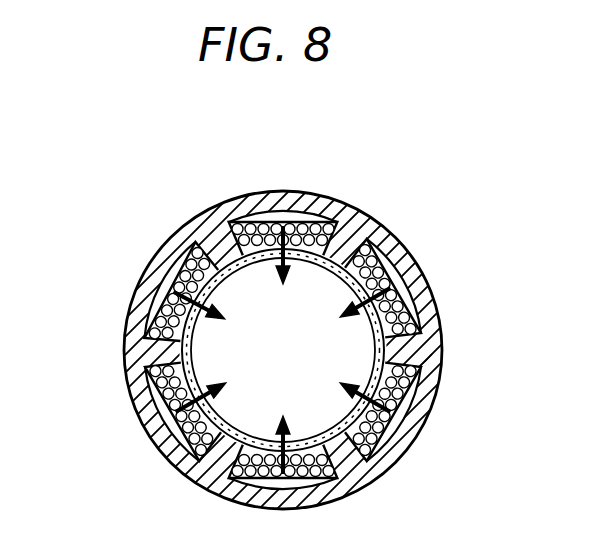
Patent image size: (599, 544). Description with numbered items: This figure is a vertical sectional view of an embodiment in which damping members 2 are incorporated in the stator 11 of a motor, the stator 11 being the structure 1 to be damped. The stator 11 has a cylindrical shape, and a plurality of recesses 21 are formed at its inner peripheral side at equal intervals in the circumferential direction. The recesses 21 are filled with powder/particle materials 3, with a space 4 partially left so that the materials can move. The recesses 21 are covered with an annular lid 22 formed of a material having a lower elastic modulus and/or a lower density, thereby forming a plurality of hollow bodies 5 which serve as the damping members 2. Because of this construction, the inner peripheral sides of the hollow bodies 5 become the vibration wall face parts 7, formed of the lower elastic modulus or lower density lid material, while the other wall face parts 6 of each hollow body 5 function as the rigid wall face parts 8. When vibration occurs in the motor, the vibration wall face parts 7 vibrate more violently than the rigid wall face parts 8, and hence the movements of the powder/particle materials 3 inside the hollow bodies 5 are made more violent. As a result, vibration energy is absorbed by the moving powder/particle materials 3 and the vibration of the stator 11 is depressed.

The structure to be damped 1 is at (178, 240).
The damping member 2 is at (157, 433).
The powder/particle materials 3 is at (423, 384).
The space 4 is at (125, 386).
The hollow body 5 is at (322, 206).
The wall face parts 6 is at (413, 437).
The vibration wall face part 7 is at (190, 340).
The rigid wall face parts 8 is at (430, 354).
The stator 11 is at (377, 220).
The recesses 21 is at (208, 288).
The annular lid 22 is at (235, 428).